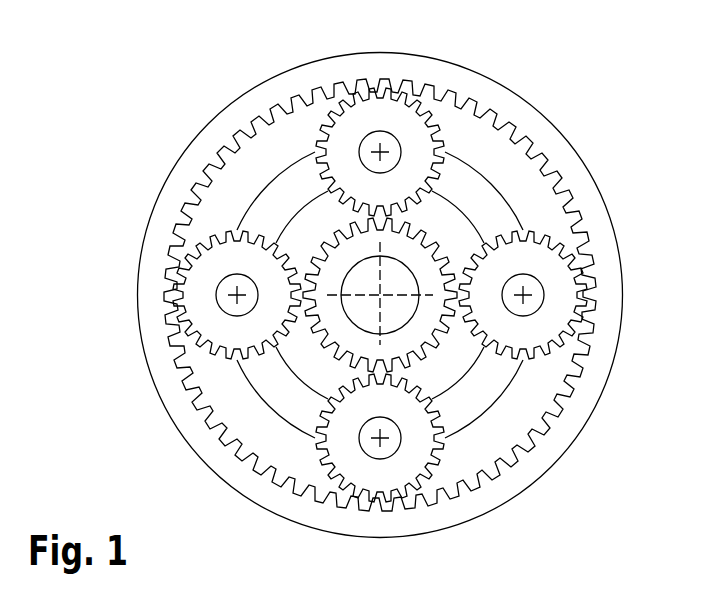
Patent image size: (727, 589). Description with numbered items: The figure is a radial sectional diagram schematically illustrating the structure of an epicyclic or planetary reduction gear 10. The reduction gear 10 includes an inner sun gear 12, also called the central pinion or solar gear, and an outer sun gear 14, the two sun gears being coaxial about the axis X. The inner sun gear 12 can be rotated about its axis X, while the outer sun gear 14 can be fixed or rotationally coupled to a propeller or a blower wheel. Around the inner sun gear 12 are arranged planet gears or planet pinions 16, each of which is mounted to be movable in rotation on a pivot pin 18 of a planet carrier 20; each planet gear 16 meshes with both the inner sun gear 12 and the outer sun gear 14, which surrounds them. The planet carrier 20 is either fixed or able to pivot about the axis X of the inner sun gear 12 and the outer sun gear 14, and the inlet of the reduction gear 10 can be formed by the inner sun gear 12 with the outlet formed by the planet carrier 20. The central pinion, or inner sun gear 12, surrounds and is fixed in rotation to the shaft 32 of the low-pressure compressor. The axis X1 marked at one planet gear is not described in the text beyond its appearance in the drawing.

The reduction gear 10 is at (584, 108).
The inner sun gear 12 is at (342, 328).
The outer sun gear 14 is at (505, 482).
The planet gear 16 is at (343, 140).
The pivot pin 18 is at (388, 144).
The planet carrier 20 is at (458, 405).
The shaft 32 is at (400, 310).
The axis X is at (380, 295).
The planet gear axis X1 is at (540, 307).